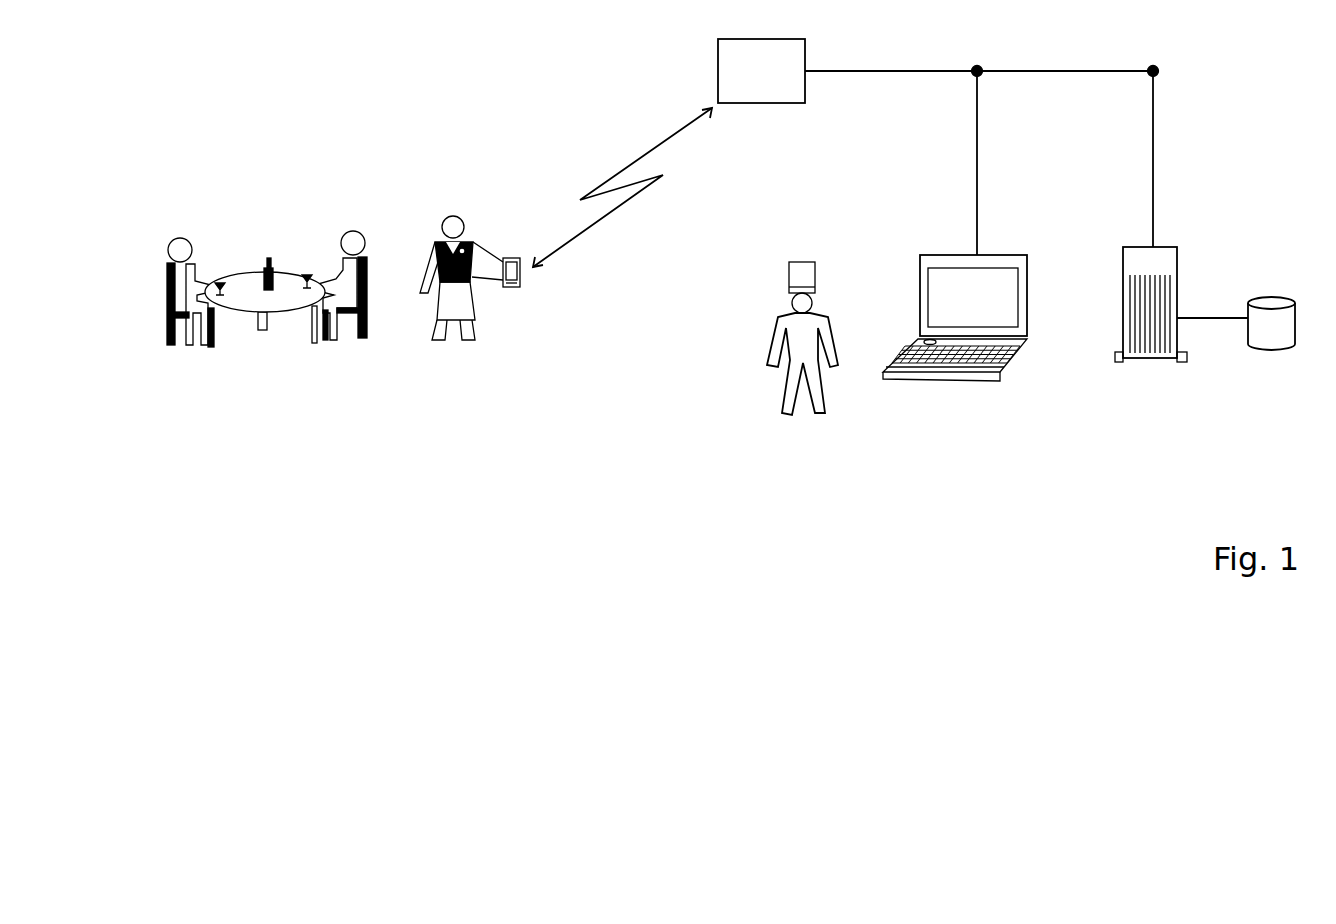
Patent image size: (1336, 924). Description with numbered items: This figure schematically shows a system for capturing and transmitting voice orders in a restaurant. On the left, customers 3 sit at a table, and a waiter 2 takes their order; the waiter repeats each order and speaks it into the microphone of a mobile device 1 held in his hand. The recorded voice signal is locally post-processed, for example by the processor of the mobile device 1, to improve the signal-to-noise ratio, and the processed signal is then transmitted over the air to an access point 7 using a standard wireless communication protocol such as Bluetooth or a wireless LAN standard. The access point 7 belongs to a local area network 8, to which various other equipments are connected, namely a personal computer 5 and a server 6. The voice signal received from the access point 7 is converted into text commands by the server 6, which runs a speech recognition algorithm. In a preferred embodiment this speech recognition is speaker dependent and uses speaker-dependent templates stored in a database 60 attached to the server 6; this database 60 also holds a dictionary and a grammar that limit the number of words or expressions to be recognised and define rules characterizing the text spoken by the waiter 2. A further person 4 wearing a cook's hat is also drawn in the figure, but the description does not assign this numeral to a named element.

The mobile device 1 is at (500, 253).
The waiter 2 is at (447, 340).
The customers 3 is at (185, 230).
The cook 4 is at (820, 383).
The personal computer 5 is at (1007, 368).
The server 6 is at (1153, 360).
The access point 7 is at (761, 71).
The local area network 8 is at (858, 73).
The database 60 is at (1271, 323).